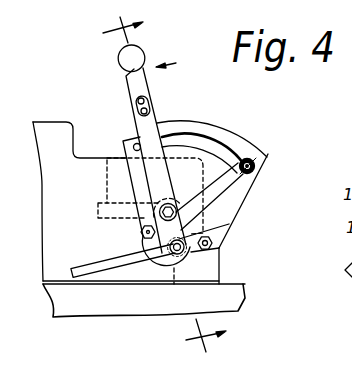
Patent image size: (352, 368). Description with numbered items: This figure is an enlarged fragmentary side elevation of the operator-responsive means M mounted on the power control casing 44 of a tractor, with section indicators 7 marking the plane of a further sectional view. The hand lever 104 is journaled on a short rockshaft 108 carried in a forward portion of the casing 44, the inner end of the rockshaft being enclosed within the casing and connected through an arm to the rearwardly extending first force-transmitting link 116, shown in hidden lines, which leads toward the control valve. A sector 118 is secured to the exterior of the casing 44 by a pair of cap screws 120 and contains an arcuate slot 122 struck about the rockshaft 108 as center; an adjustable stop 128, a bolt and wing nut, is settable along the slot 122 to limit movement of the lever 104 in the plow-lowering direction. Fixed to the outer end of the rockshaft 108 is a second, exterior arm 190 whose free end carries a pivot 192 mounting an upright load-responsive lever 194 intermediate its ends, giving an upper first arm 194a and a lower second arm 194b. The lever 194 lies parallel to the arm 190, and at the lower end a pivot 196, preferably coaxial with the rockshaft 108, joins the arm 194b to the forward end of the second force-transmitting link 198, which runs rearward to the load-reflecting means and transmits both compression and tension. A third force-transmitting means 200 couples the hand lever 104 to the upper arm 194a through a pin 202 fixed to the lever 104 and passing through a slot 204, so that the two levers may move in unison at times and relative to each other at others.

The section line 7 is at (155, 188).
The casing 44 is at (58, 118).
The hand lever 104 is at (137, 84).
The operator-responsive means M is at (176, 63).
The rockshaft 108 is at (144, 300).
The link 116 is at (138, 221).
The sector 118 is at (238, 140).
The cap screws 120 is at (213, 244).
The arcuate slot 122 is at (208, 139).
The adjustable stop 128 is at (255, 160).
The second arm 190 is at (172, 200).
The pivot 192 is at (180, 213).
The load-responsive lever 194 is at (158, 112).
The first arm 194a is at (139, 129).
The second arm 194b is at (246, 202).
The pivot 196 is at (227, 231).
The link 198 is at (96, 264).
The force-transmitting means 200 is at (160, 97).
The pin 202 is at (140, 112).
The slot 204 is at (138, 98).